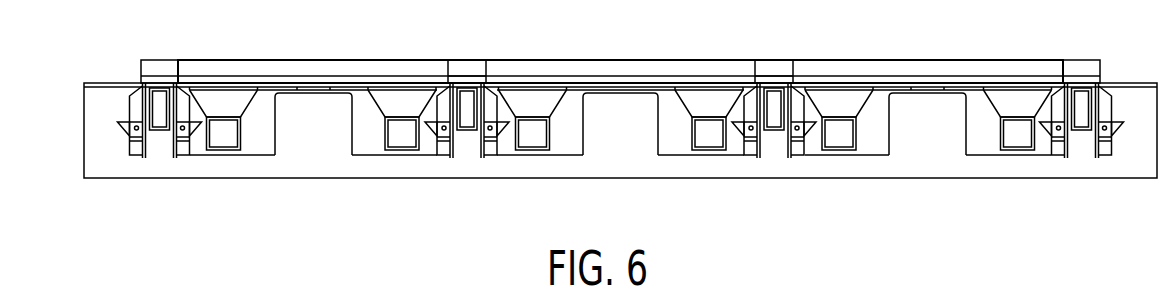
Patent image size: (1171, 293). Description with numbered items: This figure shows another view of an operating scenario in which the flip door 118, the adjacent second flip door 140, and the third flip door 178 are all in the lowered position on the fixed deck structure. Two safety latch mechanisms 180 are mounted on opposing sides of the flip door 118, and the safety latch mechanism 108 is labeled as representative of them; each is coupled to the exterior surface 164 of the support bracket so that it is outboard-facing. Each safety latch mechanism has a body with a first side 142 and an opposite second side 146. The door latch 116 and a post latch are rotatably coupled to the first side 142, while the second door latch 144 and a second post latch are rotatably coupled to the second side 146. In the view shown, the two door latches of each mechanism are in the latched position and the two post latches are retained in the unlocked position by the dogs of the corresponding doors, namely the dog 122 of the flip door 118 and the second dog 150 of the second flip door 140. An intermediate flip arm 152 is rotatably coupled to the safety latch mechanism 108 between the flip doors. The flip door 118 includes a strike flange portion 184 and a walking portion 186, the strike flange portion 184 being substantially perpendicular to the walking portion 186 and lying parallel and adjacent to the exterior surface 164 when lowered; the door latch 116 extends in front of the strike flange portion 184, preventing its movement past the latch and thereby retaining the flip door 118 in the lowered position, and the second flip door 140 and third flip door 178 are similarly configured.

The safety latch mechanism 108 is at (772, 126).
The door latch 116 is at (713, 178).
The flip door 118 is at (620, 70).
The dog 122 is at (731, 67).
The second flip door 140 is at (920, 70).
The first side 142 is at (731, 178).
The second door latch 144 is at (833, 178).
The second side 146 is at (815, 180).
The second dog 150 is at (818, 67).
The intermediate flip arm 152 is at (779, 41).
The exterior surface 164 is at (1130, 100).
The third flip door 178 is at (305, 68).
The safety latch mechanisms 180 is at (473, 145).
The strike flange portion 184 is at (670, 142).
The walking portion 186 is at (543, 70).